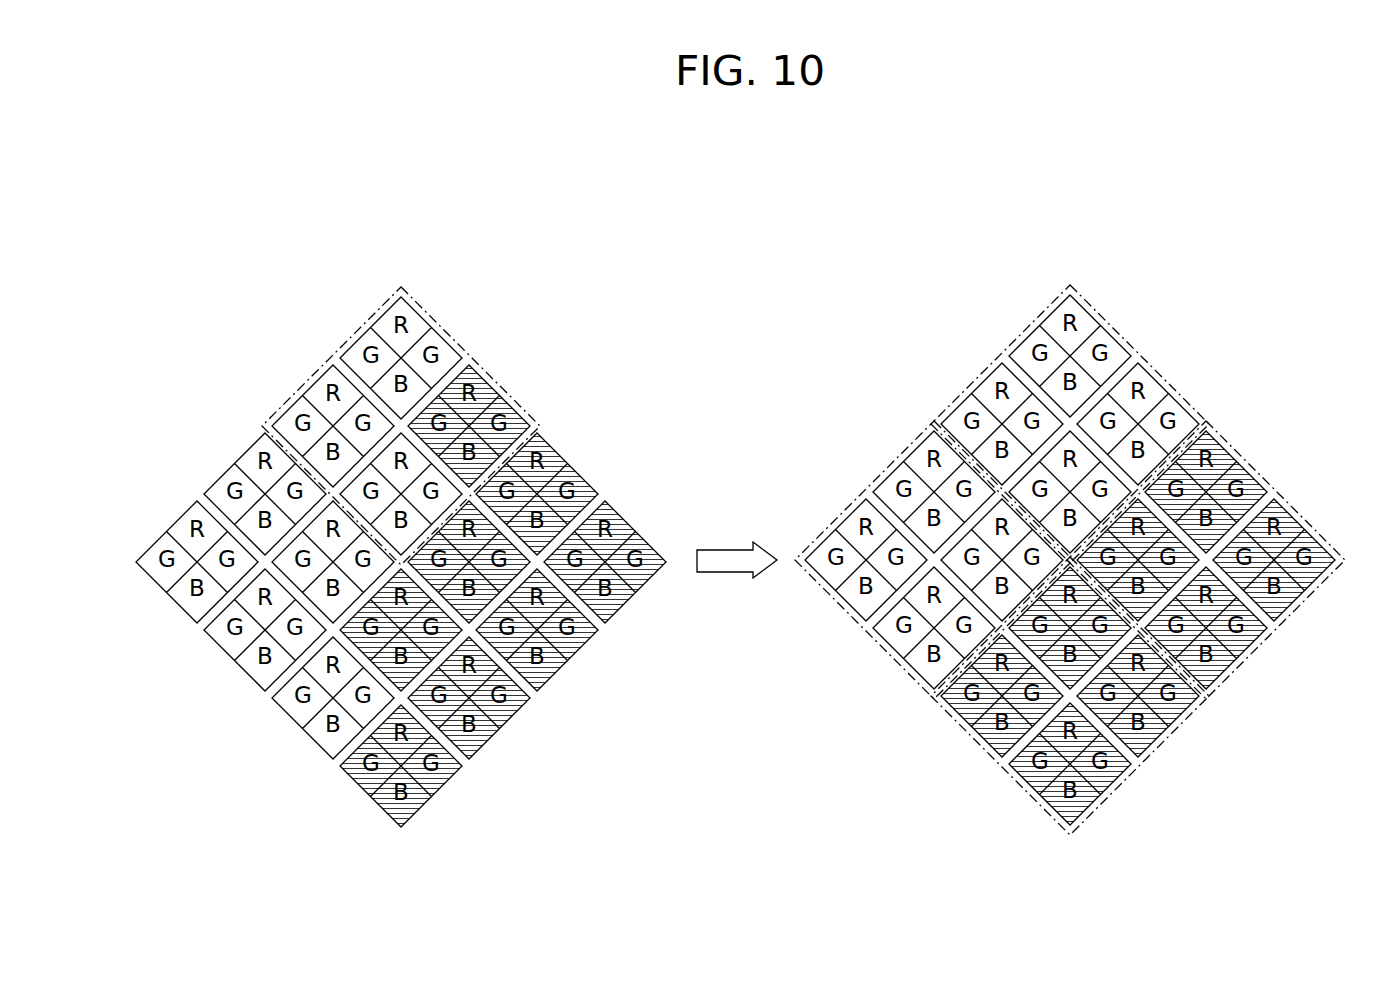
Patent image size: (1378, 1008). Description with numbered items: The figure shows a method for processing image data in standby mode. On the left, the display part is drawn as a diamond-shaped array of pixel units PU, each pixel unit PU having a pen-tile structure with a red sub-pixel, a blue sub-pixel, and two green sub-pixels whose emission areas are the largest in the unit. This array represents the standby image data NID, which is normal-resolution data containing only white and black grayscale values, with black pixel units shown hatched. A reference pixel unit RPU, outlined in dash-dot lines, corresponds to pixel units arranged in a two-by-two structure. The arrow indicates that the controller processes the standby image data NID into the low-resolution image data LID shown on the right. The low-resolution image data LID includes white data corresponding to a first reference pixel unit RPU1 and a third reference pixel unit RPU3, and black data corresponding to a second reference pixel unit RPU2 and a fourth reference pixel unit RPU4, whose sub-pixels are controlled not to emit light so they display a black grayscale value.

The standby image data NID is at (401, 518).
The low-resolution image data LID is at (1068, 522).
The pixel unit PU is at (242, 450).
The reference pixel unit RPU is at (330, 358).
The first reference pixel unit RPU1 is at (998, 355).
The second reference pixel unit RPU2 is at (1268, 485).
The third reference pixel unit RPU3 is at (862, 490).
The fourth reference pixel unit RPU4 is at (990, 755).